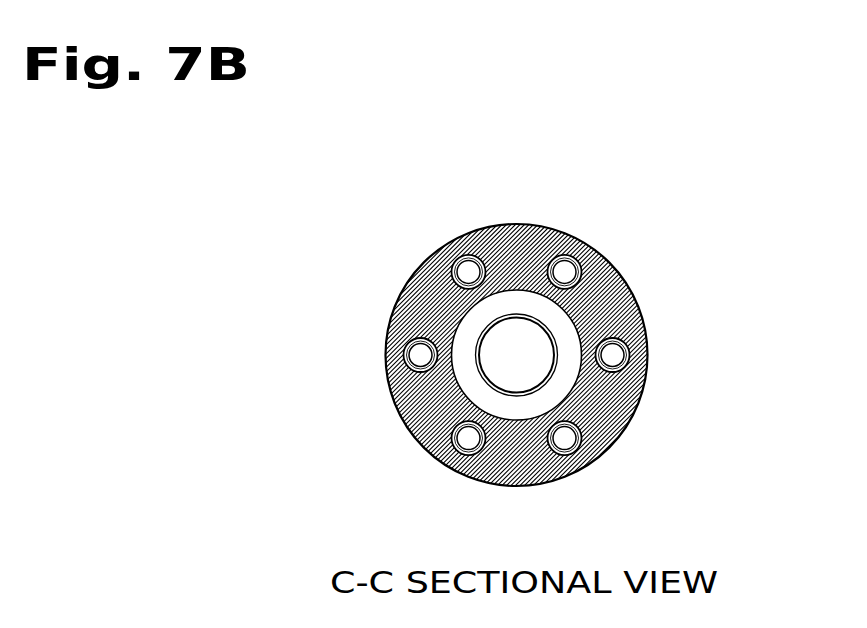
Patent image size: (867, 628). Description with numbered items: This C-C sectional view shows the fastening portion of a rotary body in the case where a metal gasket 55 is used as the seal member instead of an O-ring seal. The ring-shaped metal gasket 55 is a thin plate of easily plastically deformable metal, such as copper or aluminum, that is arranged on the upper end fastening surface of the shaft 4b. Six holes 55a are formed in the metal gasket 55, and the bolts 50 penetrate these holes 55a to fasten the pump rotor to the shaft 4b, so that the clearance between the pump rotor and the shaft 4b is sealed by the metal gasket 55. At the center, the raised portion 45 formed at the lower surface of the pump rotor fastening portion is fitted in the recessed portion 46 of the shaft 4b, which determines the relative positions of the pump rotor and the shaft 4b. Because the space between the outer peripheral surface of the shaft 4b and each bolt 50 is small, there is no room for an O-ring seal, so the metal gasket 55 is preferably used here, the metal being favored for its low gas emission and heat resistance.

The bolt 50 is at (393, 397).
The metal gasket 55 is at (408, 276).
The hole 55a is at (417, 356).
The shaft 4b is at (567, 377).
The recessed portion 46 is at (493, 334).
The raised portion 45 is at (535, 347).